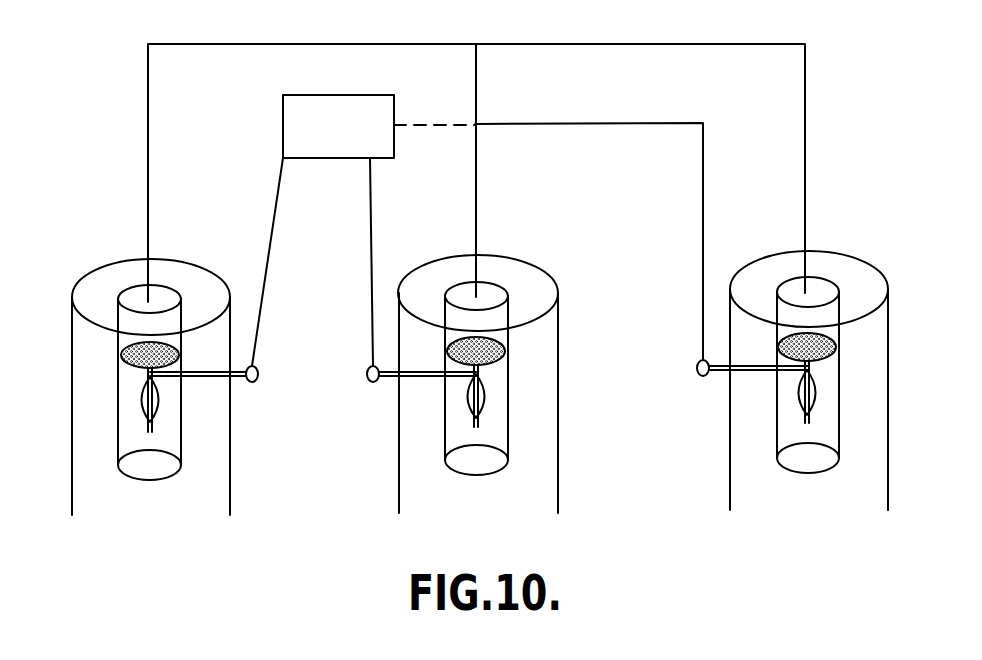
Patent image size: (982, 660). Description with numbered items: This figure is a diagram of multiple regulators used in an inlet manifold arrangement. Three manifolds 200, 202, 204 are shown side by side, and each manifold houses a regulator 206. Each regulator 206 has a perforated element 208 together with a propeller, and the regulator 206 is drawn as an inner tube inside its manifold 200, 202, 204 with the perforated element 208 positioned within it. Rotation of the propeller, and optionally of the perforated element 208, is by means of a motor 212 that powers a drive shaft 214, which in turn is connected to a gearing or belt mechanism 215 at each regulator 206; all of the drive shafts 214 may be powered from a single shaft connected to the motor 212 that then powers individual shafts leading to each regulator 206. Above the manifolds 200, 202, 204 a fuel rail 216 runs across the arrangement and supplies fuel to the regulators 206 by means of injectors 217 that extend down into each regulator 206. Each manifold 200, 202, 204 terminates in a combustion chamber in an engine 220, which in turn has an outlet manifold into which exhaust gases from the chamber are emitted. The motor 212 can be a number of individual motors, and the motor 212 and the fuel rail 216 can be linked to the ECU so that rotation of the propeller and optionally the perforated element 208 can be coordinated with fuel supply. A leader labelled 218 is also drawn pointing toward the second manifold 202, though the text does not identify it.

The manifold 200 is at (103, 288).
The manifold 202 is at (435, 288).
The manifold 204 is at (770, 288).
The regulator 206 is at (113, 410).
The perforated element 208 is at (490, 337).
The motor 212 is at (283, 148).
The drive shaft 214 is at (425, 376).
The gearing or belt mechanism 215 is at (364, 380).
The fuel rail 216 is at (547, 44).
The injector 217 is at (478, 296).
The vessel wall 218 is at (515, 290).
The engine 220 is at (477, 502).